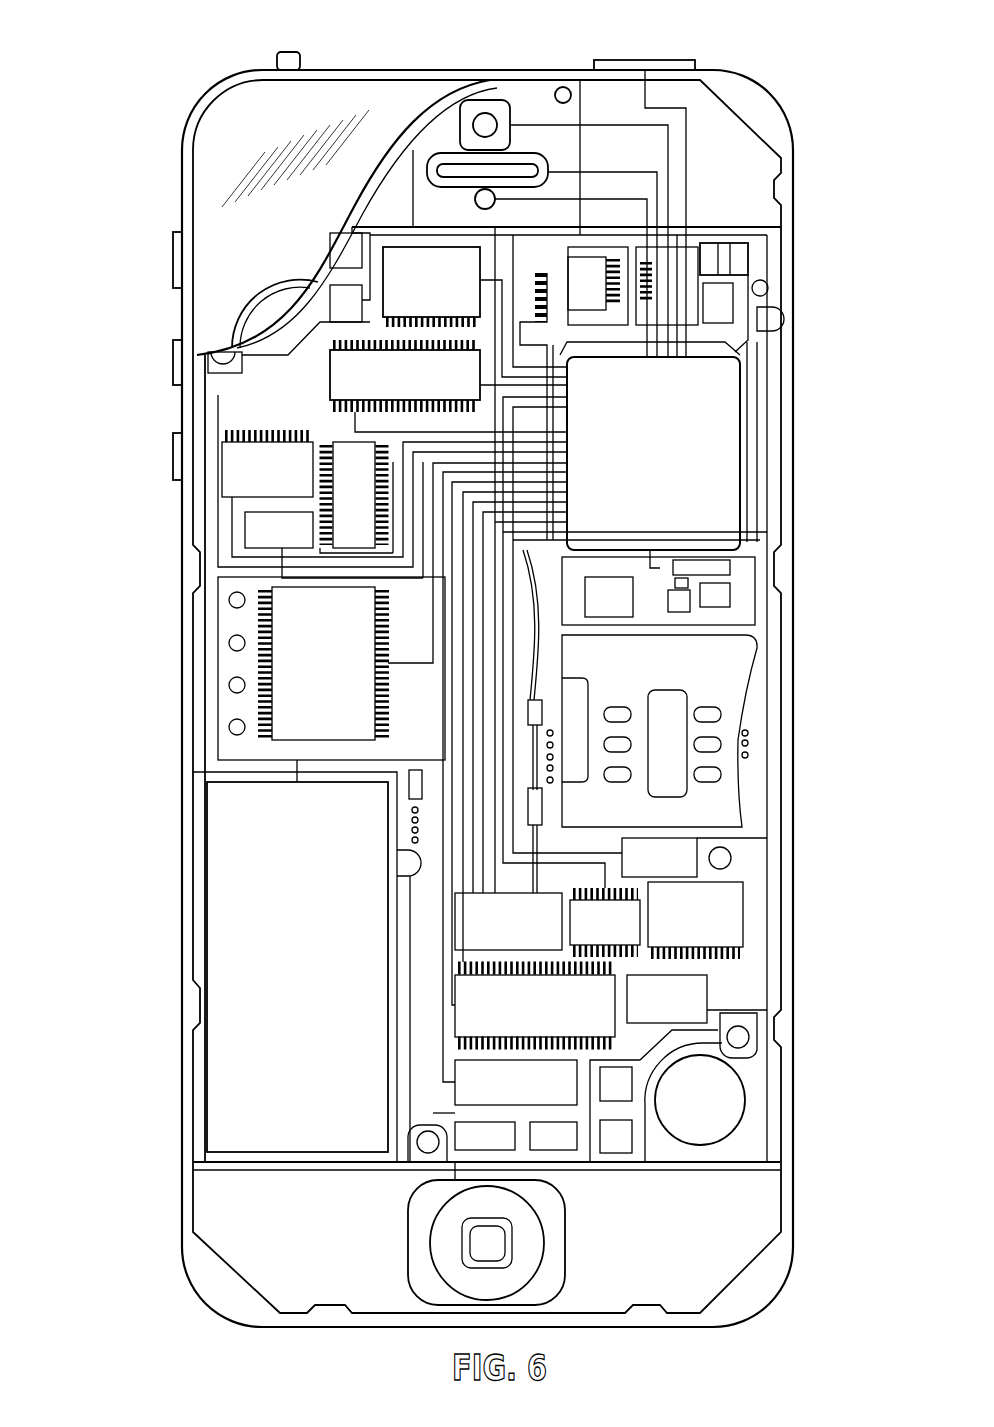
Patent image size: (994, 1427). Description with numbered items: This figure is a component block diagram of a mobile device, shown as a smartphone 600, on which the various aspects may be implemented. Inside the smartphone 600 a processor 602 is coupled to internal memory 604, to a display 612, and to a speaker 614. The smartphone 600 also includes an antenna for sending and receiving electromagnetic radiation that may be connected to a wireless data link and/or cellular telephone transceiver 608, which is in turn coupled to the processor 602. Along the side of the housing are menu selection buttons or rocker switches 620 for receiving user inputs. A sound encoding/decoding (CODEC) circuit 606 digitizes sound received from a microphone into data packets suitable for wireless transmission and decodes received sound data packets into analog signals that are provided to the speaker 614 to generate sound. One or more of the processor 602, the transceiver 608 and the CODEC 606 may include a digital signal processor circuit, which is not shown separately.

The smartphone 600 is at (152, 83).
The processor 602 is at (674, 466).
The internal memory 604 is at (453, 296).
The sound encoding/decoding (CODEC) circuit 606 is at (426, 389).
The wireless data link and/or cellular telephone transceiver 608 is at (690, 262).
The display 612 is at (210, 185).
The speaker 614 is at (444, 153).
The menu selection buttons or rocker switches 620 is at (173, 258).